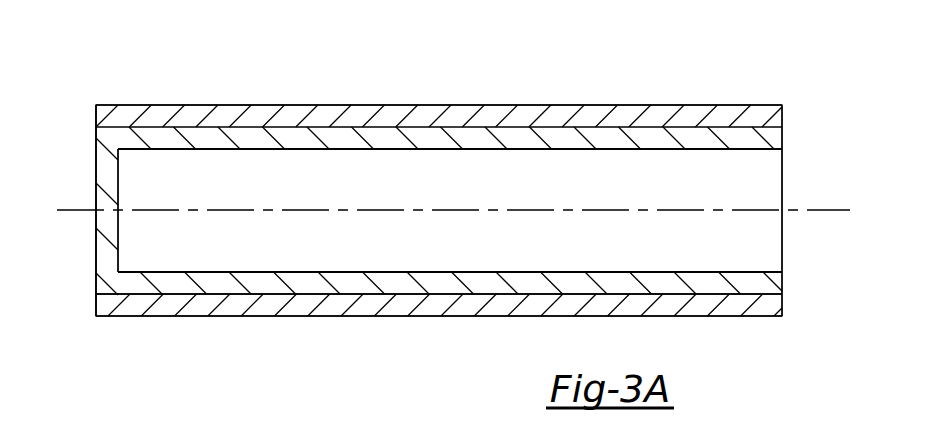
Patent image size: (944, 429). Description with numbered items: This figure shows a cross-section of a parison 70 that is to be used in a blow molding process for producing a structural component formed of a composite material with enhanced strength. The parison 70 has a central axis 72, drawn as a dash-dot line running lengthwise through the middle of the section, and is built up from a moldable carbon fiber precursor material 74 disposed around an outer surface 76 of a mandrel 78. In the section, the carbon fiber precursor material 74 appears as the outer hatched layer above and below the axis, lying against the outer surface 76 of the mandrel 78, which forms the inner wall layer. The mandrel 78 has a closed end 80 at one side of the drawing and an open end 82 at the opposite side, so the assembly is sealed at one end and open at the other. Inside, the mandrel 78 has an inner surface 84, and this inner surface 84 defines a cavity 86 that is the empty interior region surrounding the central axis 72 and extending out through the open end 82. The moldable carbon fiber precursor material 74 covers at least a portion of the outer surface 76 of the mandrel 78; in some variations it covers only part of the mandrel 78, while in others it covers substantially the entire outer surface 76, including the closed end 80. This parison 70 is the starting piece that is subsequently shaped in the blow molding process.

The parison 70 is at (194, 42).
The central axis 72 is at (75, 210).
The moldable carbon fiber precursor material 74 is at (368, 113).
The outer surface 76 is at (276, 294).
The mandrel 78 is at (488, 280).
The closed end 80 is at (74, 263).
The open end 82 is at (803, 263).
The inner surface 84 is at (665, 273).
The cavity 86 is at (710, 178).